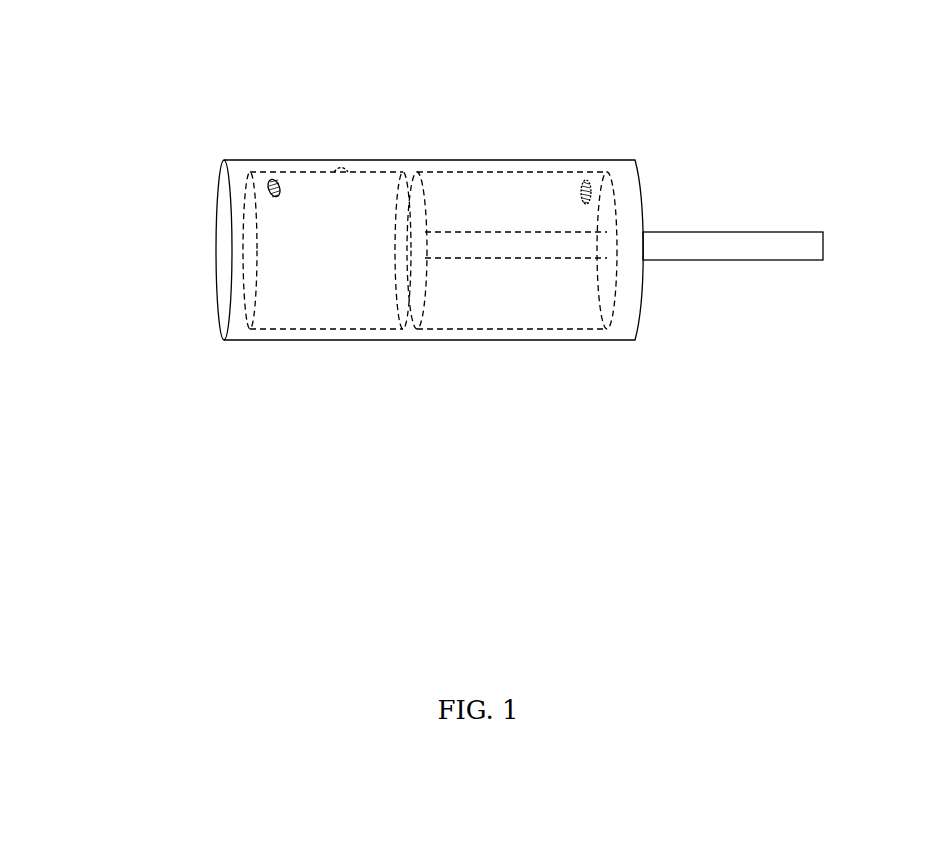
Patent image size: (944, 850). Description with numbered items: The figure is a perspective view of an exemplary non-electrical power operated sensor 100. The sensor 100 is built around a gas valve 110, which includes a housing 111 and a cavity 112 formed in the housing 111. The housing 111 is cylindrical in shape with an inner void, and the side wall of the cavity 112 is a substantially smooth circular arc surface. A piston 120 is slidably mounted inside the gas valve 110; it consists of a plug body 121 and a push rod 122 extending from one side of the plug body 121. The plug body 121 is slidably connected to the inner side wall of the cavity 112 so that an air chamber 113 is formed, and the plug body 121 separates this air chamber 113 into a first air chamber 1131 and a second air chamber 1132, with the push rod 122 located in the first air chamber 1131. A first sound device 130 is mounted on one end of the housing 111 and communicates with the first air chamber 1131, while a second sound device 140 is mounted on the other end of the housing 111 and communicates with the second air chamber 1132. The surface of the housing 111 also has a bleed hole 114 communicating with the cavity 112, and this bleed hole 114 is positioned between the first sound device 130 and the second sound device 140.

The non-electrical power operated sensor 100 is at (167, 125).
The gas valve 110 is at (750, 435).
The housing 111 is at (625, 313).
The cavity 112 is at (603, 330).
The air chamber 113 is at (510, 447).
The first air chamber 1131 is at (492, 313).
The second air chamber 1132 is at (305, 315).
The bleed hole 114 is at (341, 170).
The piston 120 is at (717, 62).
The plug body 121 is at (420, 203).
The push rod 122 is at (733, 243).
The first sound device 130 is at (588, 200).
The second sound device 140 is at (270, 190).